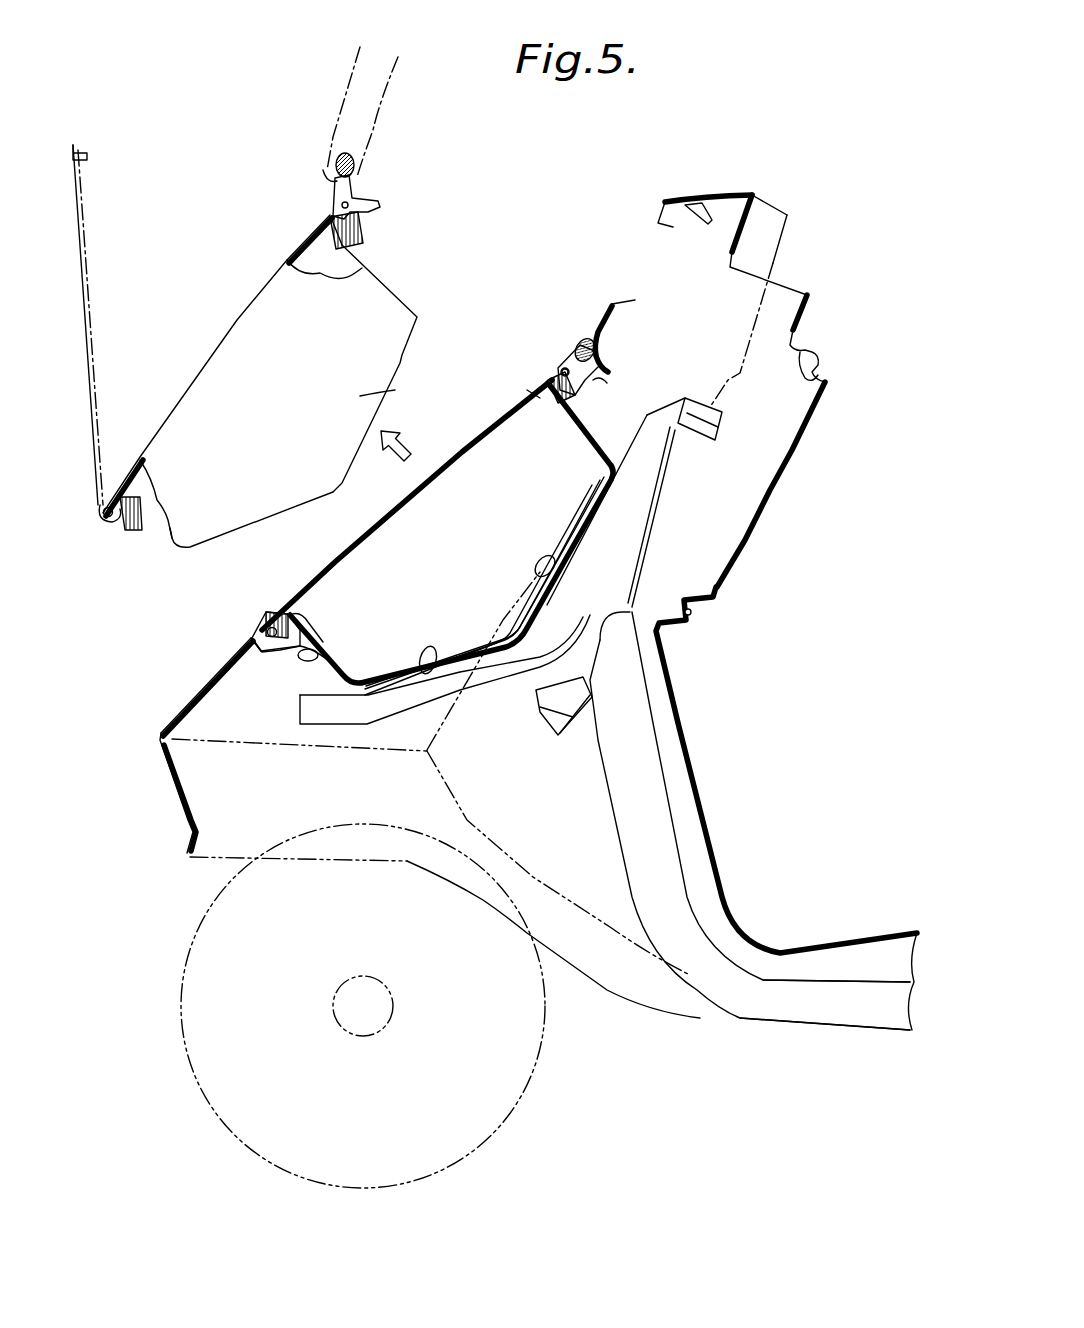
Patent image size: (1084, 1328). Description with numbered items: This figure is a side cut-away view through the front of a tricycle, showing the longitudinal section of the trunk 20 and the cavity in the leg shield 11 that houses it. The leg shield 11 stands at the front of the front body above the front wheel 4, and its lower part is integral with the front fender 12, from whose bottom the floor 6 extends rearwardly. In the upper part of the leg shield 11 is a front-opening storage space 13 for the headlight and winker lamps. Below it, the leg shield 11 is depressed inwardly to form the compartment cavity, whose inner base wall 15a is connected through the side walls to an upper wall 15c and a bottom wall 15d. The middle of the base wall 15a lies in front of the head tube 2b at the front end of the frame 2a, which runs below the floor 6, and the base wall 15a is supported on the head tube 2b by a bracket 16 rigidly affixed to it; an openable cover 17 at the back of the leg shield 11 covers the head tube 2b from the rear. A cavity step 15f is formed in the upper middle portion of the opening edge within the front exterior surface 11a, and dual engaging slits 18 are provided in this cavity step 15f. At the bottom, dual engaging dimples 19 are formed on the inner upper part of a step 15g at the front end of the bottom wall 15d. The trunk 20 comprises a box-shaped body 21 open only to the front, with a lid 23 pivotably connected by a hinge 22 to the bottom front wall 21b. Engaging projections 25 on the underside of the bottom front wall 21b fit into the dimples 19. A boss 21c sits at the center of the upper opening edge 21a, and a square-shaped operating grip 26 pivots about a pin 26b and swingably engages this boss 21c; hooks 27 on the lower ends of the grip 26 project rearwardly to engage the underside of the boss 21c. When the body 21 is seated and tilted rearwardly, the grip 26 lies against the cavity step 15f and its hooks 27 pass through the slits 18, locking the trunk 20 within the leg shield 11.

The frame 2a is at (657, 840).
The head tube 2b is at (657, 518).
The front wheel 4 is at (500, 1124).
The floor 6 is at (857, 940).
The leg shield 11 is at (181, 693).
The front exterior surface 11a is at (223, 663).
The front fender 12 is at (177, 797).
The storage space 13 is at (662, 224).
The inner base wall 15a is at (562, 583).
The upper wall 15c is at (553, 470).
The bottom wall 15d is at (424, 674).
The cavity step 15f is at (603, 340).
The step 15g is at (263, 656).
The bracket 16 is at (493, 677).
The openable cover 17 is at (773, 497).
The engaging slits 18 is at (593, 380).
The engaging dimples 19 is at (318, 653).
The trunk 20 is at (405, 293).
The body 21 is at (395, 390).
The opening edge 21a is at (530, 393).
The bottom front wall 21b is at (333, 660).
The boss 21c is at (543, 377).
The hinge 22 is at (100, 513).
The lid 23 is at (122, 467).
The engaging projections 25 is at (137, 527).
The operating grip 26 is at (354, 158).
The pin 26b is at (563, 368).
The hook 27 is at (380, 207).